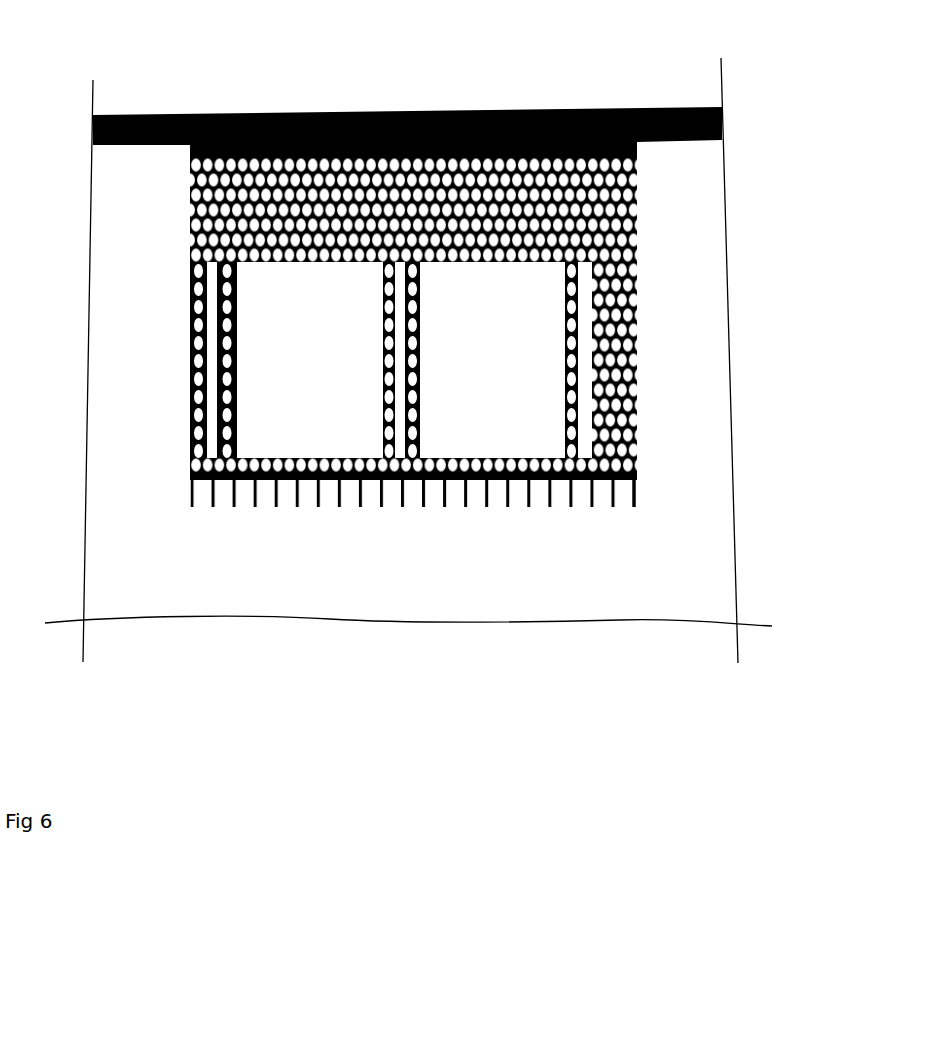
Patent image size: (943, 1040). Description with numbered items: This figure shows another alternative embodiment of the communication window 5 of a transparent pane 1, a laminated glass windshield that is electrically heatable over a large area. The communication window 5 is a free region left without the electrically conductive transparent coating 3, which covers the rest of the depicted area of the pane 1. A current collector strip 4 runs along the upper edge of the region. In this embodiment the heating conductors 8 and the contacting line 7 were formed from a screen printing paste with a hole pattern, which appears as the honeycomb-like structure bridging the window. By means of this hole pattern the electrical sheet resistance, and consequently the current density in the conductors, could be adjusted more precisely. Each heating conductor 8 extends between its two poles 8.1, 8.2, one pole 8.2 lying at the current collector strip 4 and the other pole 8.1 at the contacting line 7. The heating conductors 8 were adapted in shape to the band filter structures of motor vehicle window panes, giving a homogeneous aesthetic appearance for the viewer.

The transparent pane 1 is at (602, 92).
The electrically conductive transparent coating 3 is at (130, 202).
The current collector strip 4 is at (133, 115).
The communication window 5 is at (502, 300).
The contacting line 7 is at (640, 488).
The heating conductor 8 is at (575, 342).
The pole of the heating conductor 8.1 is at (628, 512).
The pole of the heating conductor 8.2 is at (648, 148).